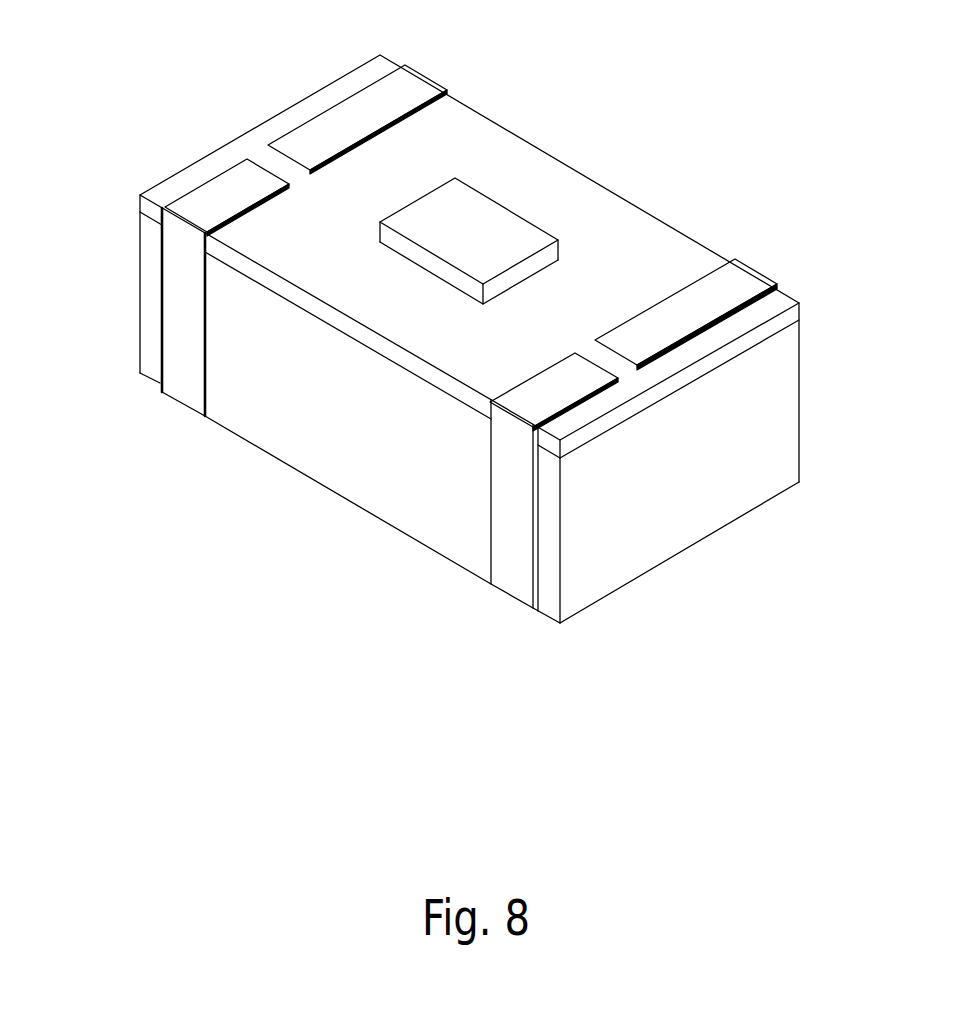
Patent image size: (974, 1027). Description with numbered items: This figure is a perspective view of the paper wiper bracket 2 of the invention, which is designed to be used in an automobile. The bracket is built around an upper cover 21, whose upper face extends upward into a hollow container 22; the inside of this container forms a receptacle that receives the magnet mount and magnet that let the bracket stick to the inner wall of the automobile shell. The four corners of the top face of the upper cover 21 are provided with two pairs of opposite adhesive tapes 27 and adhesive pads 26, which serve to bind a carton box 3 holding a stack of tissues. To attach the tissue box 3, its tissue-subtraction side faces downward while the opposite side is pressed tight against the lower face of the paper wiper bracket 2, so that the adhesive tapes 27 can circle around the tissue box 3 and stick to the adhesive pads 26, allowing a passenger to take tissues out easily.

The paper wiper bracket 2 is at (577, 170).
The upper cover 21 is at (643, 250).
The container 22 is at (473, 228).
The adhesive pads 26 is at (428, 108).
The adhesive tapes 27 is at (228, 195).
The carton box / tissue box 3 is at (712, 478).